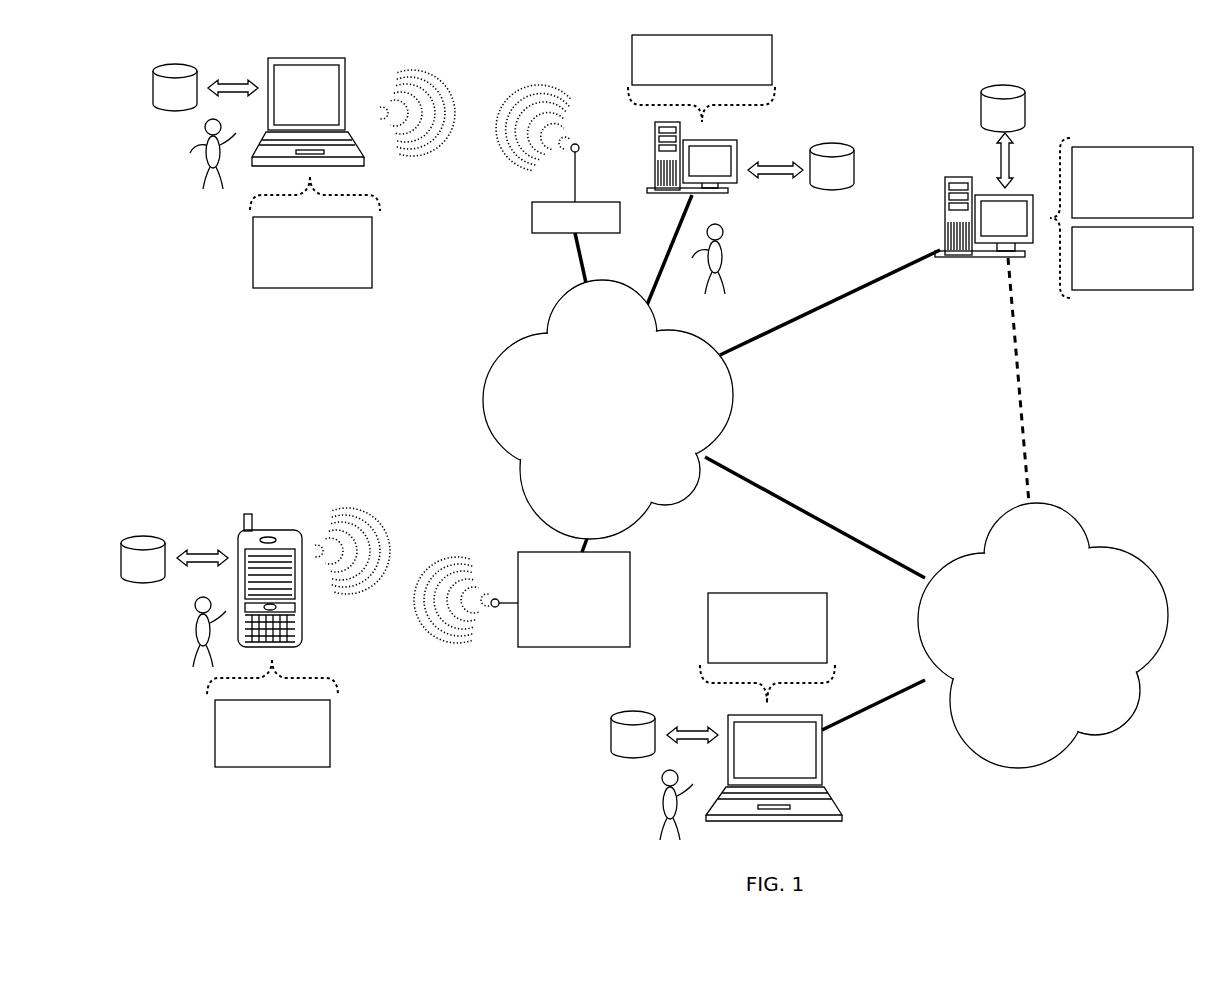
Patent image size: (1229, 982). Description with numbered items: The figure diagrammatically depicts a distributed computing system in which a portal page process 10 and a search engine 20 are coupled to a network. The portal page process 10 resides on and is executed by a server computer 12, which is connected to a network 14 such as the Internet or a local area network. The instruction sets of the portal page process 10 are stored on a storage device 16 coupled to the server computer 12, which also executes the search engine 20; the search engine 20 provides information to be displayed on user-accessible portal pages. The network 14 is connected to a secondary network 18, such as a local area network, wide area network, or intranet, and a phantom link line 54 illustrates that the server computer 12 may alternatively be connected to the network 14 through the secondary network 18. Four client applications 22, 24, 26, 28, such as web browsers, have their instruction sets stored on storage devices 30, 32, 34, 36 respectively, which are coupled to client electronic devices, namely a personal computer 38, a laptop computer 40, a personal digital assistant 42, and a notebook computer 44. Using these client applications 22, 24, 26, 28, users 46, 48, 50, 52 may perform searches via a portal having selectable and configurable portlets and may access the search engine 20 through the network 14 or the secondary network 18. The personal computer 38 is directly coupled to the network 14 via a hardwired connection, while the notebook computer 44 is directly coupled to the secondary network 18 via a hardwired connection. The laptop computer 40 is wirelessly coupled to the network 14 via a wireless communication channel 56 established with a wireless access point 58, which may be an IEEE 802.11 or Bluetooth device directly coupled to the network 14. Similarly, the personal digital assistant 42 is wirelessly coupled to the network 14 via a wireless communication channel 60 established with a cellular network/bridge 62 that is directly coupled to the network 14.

The portal page process 10 is at (1193, 178).
The server computer 12 is at (945, 200).
The network 14 is at (608, 409).
The storage device 16 is at (1003, 108).
The secondary network 18 is at (1043, 635).
The search engine 20 is at (1193, 258).
The client application 22 is at (772, 60).
The client application 24 is at (372, 240).
The client application 26 is at (330, 727).
The client application 28 is at (827, 638).
The storage device 30 is at (832, 166).
The storage device 32 is at (175, 87).
The storage device 34 is at (143, 559).
The storage device 36 is at (633, 734).
The personal computer 38 is at (737, 155).
The laptop computer 40 is at (345, 80).
The personal digital assistant 42 is at (303, 590).
The notebook computer 44 is at (822, 760).
The user 46 is at (722, 250).
The user 48 is at (180, 145).
The user 50 is at (196, 623).
The user 52 is at (663, 796).
The phantom link line 54 is at (1014, 372).
The wireless communication channel 56 is at (483, 92).
The wireless access point 58 is at (533, 218).
The wireless communication channel 60 is at (415, 552).
The cellular network/bridge 62 is at (630, 567).